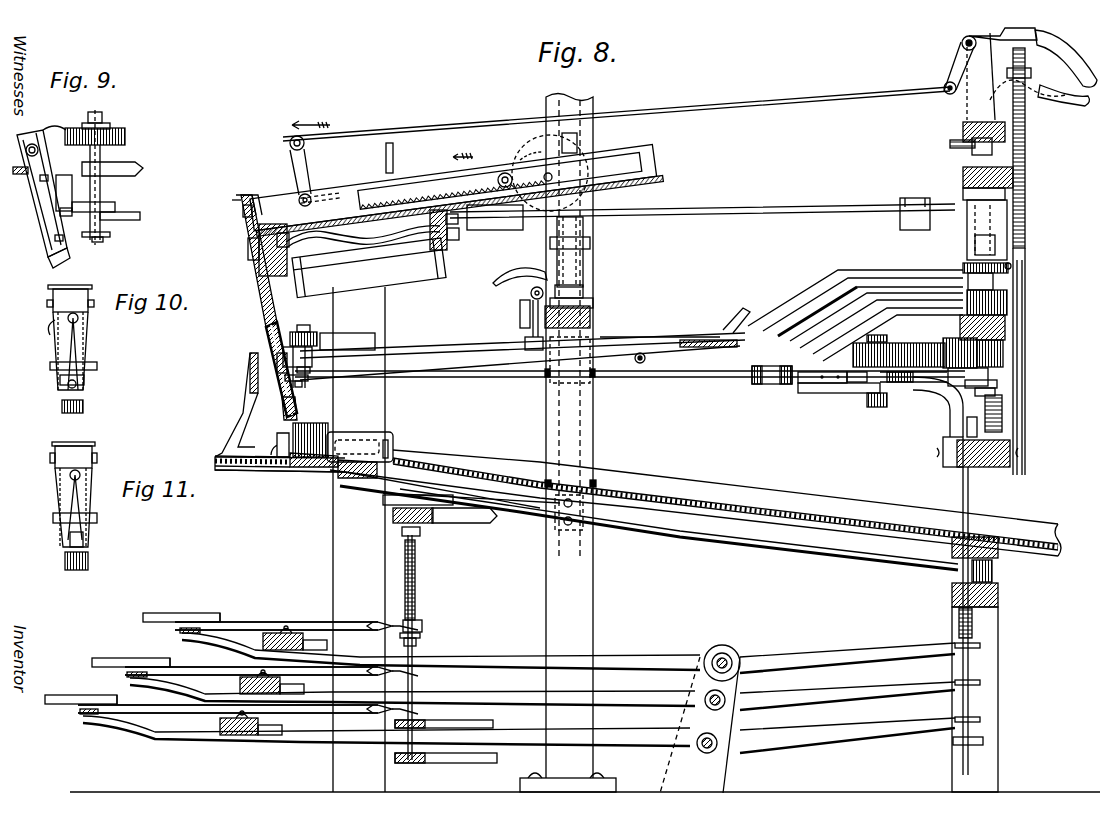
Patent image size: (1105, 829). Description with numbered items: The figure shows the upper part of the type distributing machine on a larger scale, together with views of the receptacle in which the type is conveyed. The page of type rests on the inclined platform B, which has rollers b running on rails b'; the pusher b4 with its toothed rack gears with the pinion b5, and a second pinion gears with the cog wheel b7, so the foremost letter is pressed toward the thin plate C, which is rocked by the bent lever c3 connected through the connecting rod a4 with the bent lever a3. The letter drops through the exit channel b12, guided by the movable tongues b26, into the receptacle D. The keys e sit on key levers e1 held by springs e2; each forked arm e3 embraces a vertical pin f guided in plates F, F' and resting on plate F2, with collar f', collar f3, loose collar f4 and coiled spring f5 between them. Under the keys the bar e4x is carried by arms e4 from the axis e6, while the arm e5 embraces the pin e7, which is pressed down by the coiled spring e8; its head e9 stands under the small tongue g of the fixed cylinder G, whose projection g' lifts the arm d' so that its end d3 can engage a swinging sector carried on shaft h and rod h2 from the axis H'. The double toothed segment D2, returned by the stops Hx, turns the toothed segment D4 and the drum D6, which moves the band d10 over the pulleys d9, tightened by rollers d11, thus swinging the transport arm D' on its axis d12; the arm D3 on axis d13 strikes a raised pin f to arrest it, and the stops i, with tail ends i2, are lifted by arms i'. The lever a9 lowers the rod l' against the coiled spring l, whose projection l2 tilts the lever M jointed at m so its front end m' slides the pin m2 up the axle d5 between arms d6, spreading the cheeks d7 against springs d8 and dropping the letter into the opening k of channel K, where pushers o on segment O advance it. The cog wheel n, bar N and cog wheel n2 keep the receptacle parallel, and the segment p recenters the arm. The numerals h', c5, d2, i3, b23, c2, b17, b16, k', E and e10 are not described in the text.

In FIG. 8, the connecting rod a4 is at (747, 105).
In FIG. 8, the two armed lever a9 is at (1060, 70).
In FIG. 8, the bent lever a3 is at (1075, 104).
In FIG. 8, the cog wheel segment p is at (950, 144).
In FIG. 8, the coiled spring l is at (1022, 261).
In FIG. 8, the rod l' is at (1029, 367).
In FIG. 8, the projection l2 is at (1012, 268).
In FIG. 8, the vertical shaft h is at (1008, 241).
In FIG. 8, the rod h2 is at (780, 212).
In FIG. 8, the axis H' is at (582, 252).
In FIG. 8, the bracket base h' is at (578, 306).
In FIG. 8, the axis of transport arm d12 is at (967, 244).
In FIG. 8, the cog wheel n2 is at (963, 266).
In FIG. 8, the arm d' is at (994, 338).
In FIG. 8, the gear c5 is at (842, 373).
In FIG. 8, the bar N is at (355, 333).
In FIG. 8, the transport arm D' is at (522, 343).
In FIG. 9, the transport arm D' is at (112, 158).
In FIG. 8, the band d10 is at (470, 377).
In FIG. 8, the front end of lever M m' is at (520, 368).
In FIG. 8, the rollers d11 is at (760, 385).
In FIG. 8, the double wheel or drum D6 is at (808, 393).
In FIG. 8, the double toothed segment D2 is at (875, 407).
In FIG. 8, the toothed segment D4 is at (925, 385).
In FIG. 8, the fixed cylinder G is at (1000, 394).
In FIG. 8, the small tongue g is at (1016, 413).
In FIG. 8, the stop Hx is at (997, 384).
In FIG. 8, the projection g' is at (946, 438).
In FIG. 8, the shaft d2 is at (977, 425).
In FIG. 8, the head of rod e7 e9 is at (957, 448).
In FIG. 8, the pin e7 is at (968, 490).
In FIG. 8, the coiled spring e8 is at (975, 623).
In FIG. 8, the axis of arm D3 d13 is at (992, 572).
In FIG. 8, the arm i' is at (520, 267).
In FIG. 8, the tail end i2 is at (531, 292).
In FIG. 8, the link i3 is at (520, 314).
In FIG. 8, the lever stop i is at (524, 337).
In FIG. 8, the cog wheel b7 is at (530, 160).
In FIG. 8, the pinion b5 is at (498, 181).
In FIG. 8, the pusher b4 is at (472, 155).
In FIG. 8, the platform B is at (352, 200).
In FIG. 8, the post b23 is at (386, 163).
In FIG. 8, the second bent lever c3 is at (303, 173).
In FIG. 8, the thin plate C is at (260, 195).
In FIG. 8, the exit channel b12 is at (238, 199).
In FIG. 8, the lug c2 is at (247, 214).
In FIG. 8, the movable tongues b26 is at (266, 328).
In FIG. 8, the rollers b is at (344, 250).
In FIG. 8, the bearing b17 is at (445, 250).
In FIG. 8, the bolt b16 is at (459, 211).
In FIG. 8, the rails b' is at (357, 271).
In FIG. 8, the cog wheel n is at (312, 332).
In FIG. 9, the cog wheel n is at (125, 135).
In FIG. 8, the pin m2 is at (310, 368).
In FIG. 9, the pin m2 is at (75, 208).
In FIG. 10, the pin m2 is at (60, 378).
In FIG. 8, the axle of receptacle d5 is at (305, 385).
In FIG. 9, the axle of receptacle d5 is at (103, 196).
In FIG. 8, the receptacle D is at (280, 412).
In FIG. 9, the receptacle D is at (37, 191).
In FIG. 10, the receptacle D is at (70, 349).
In FIG. 11, the receptacle D is at (73, 506).
In FIG. 8, the opening k is at (279, 408).
In FIG. 8, the pusher o is at (277, 445).
In FIG. 8, the segment O is at (260, 471).
In FIG. 8, the type receiving channel K is at (638, 503).
In FIG. 8, the sleeve k' is at (343, 442).
In FIG. 8, the arm D3 is at (737, 535).
In FIG. 8, the pulleys d9 is at (592, 380).
In FIG. 8, the joint m is at (650, 367).
In FIG. 8, the lever M is at (738, 342).
In FIG. 8, the vertical pin f is at (422, 647).
In FIG. 8, the collar f3 is at (422, 535).
In FIG. 8, the plate F is at (440, 519).
In FIG. 8, the coiled spring f5 is at (405, 598).
In FIG. 8, the loose collar f4 is at (420, 630).
In FIG. 8, the collar f' is at (400, 640).
In FIG. 8, the plate F' is at (444, 713).
In FIG. 8, the plate F2 is at (446, 768).
In FIG. 8, the spring assembly E is at (228, 665).
In FIG. 8, the plate e10 is at (162, 613).
In FIG. 8, the key lever e1 is at (242, 621).
In FIG. 8, the key e is at (193, 621).
In FIG. 8, the forked arm e3 is at (433, 712).
In FIG. 8, the bar e4x is at (180, 633).
In FIG. 8, the spring e2 is at (263, 638).
In FIG. 8, the arms e4 is at (512, 655).
In FIG. 8, the axis e6 is at (730, 655).
In FIG. 8, the arm e5 is at (810, 655).
In FIG. 9, the arms of receptacle d6 is at (68, 178).
In FIG. 10, the arms of receptacle d6 is at (80, 345).
In FIG. 11, the arms of receptacle d6 is at (84, 505).
In FIG. 9, the end of arm d' d3 is at (22, 174).
In FIG. 10, the end of arm d' d3 is at (62, 345).
In FIG. 11, the end of arm d' d3 is at (62, 500).
In FIG. 9, the bow shaped cheeks d7 is at (52, 232).
In FIG. 10, the bow shaped cheeks d7 is at (78, 385).
In FIG. 11, the bow shaped cheeks d7 is at (84, 540).
In FIG. 10, the springs d8 is at (50, 322).